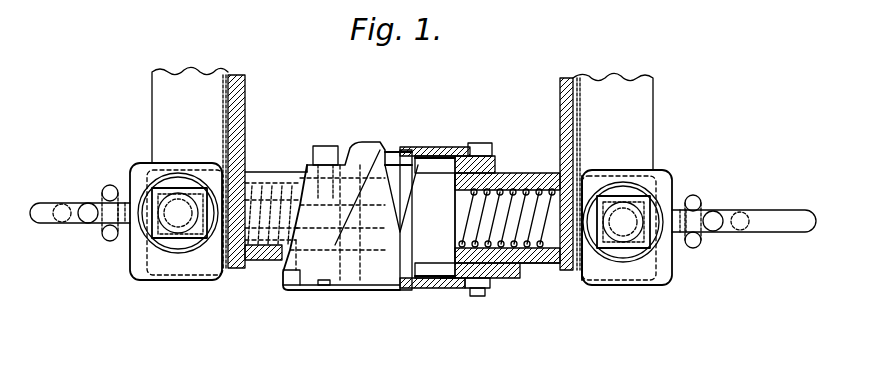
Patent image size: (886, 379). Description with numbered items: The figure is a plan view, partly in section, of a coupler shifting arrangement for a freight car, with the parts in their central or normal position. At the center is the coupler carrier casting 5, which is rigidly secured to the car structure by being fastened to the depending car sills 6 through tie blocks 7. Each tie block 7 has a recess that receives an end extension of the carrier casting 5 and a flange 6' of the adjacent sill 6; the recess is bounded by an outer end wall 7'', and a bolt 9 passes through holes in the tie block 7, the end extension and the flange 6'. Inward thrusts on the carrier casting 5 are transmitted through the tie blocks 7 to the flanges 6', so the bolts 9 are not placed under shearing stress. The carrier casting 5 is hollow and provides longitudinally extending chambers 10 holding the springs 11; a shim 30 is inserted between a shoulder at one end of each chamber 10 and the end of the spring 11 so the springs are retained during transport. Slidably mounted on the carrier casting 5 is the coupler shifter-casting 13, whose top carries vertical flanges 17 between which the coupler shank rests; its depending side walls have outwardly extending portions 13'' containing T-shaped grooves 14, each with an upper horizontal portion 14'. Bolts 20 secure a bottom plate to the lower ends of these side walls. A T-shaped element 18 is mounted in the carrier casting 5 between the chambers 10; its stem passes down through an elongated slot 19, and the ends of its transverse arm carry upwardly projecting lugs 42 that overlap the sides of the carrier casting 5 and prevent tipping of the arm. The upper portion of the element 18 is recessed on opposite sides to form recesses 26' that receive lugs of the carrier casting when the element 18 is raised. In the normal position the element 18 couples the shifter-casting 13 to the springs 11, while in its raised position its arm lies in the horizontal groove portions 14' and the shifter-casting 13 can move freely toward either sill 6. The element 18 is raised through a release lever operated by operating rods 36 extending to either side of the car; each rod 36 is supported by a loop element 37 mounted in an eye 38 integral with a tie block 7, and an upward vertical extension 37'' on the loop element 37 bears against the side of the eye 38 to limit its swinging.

The coupler carrier casting 5 is at (556, 265).
The car sill 6 is at (401, 170).
The sill flange 6' is at (393, 118).
The tie block 7 is at (403, 221).
The outer end wall 7'' is at (401, 298).
The bolt 9 is at (178, 192).
The spring chamber 10 is at (270, 245).
The spring 11 is at (275, 179).
The coupler shifter-casting 13 is at (341, 236).
The outwardly extending portion 13'' is at (435, 218).
The T-shaped groove 14 is at (441, 194).
The upper horizontal groove portion 14' is at (473, 241).
The vertical flange 17 is at (280, 272).
The T-shaped element 18 is at (390, 177).
The slot 19 is at (446, 290).
The bolt 20 is at (324, 146).
The recess 26' is at (348, 303).
The shim 30 is at (582, 178).
The operating rod 36 is at (62, 204).
The loop element 37 is at (385, 246).
The upward vertical extension 37'' is at (410, 181).
The eye 38 is at (88, 224).
The lug 42 is at (397, 162).